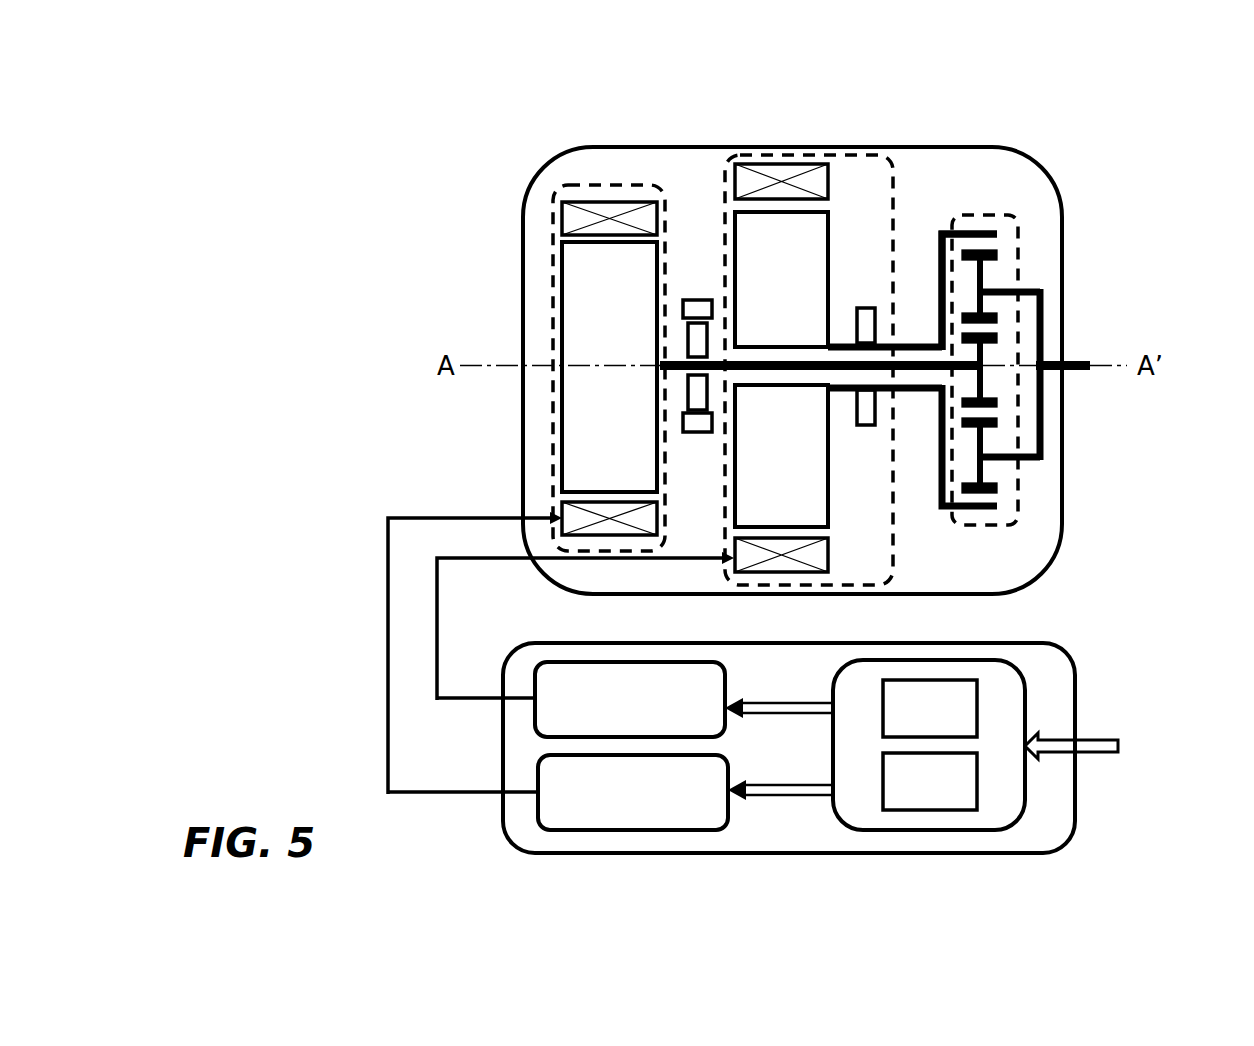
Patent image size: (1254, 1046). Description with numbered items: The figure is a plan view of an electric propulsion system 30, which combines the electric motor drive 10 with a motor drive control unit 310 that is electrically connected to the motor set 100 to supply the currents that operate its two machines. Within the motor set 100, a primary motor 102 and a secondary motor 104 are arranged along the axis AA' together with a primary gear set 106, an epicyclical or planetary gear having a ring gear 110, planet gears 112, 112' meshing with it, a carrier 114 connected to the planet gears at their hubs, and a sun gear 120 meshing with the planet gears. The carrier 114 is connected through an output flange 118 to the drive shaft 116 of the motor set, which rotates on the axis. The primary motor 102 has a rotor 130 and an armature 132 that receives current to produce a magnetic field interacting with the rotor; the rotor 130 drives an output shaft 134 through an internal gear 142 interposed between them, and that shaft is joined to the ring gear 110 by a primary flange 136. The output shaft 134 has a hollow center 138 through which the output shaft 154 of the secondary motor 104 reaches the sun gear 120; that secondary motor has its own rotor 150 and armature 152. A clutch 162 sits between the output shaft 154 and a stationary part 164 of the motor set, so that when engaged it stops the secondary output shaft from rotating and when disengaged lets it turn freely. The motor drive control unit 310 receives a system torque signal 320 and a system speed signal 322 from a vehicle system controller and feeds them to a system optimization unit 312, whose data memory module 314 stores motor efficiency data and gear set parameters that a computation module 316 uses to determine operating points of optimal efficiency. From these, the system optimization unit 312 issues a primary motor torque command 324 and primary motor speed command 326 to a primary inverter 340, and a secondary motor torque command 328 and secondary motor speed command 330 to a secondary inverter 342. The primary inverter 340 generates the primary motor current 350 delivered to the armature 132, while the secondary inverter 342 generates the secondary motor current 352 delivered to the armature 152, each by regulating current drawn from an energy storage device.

The electric motor drive 10 is at (1138, 182).
The electric propulsion system 30 is at (314, 112).
The motor set 100 is at (1037, 163).
The primary motor 102 is at (885, 162).
The secondary motor 104 is at (620, 185).
The primary gear set 106 is at (967, 215).
The ring gear 110 is at (1000, 230).
The planet gears 112 is at (1042, 258).
The planet gear 112' is at (1046, 455).
The carrier 114 is at (998, 285).
The drive shaft 116 is at (1085, 362).
The output flange 118 is at (1040, 315).
The sun gear 120 is at (985, 378).
The rotor 130 is at (830, 228).
The armature 132 is at (797, 165).
The output shaft 134 is at (922, 343).
The primary flange 136 is at (937, 262).
The hollow center 138 is at (848, 378).
The internal gear 142 is at (857, 312).
The rotor 150 is at (550, 271).
The armature 152 is at (557, 200).
The output shaft 154 is at (675, 361).
The clutch 162 is at (687, 398).
The stationary part 164 is at (695, 302).
The motor drive control unit 310 is at (1081, 650).
The system optimization unit 312 is at (990, 660).
The data memory module 314 is at (902, 680).
The computation module 316 is at (977, 806).
The system torque signal 320 is at (1128, 723).
The system speed signal 322 is at (1165, 759).
The primary motor torque command 324 is at (744, 666).
The primary motor speed command 326 is at (799, 666).
The secondary motor torque command 328 is at (754, 753).
The secondary motor speed command 330 is at (796, 780).
The primary inverter 340 is at (617, 662).
The secondary inverter 342 is at (538, 818).
The primary motor current 350 is at (469, 662).
The secondary motor current 352 is at (407, 760).